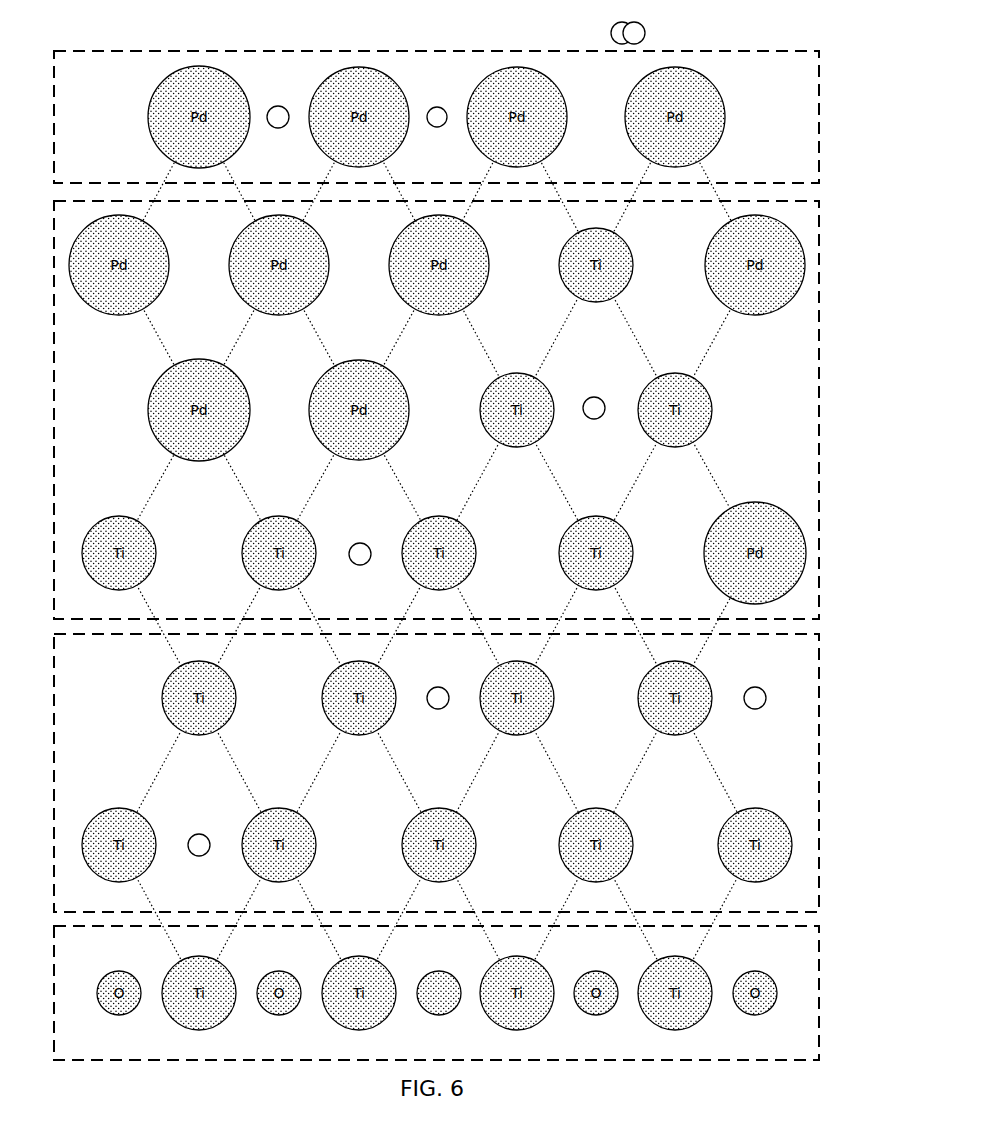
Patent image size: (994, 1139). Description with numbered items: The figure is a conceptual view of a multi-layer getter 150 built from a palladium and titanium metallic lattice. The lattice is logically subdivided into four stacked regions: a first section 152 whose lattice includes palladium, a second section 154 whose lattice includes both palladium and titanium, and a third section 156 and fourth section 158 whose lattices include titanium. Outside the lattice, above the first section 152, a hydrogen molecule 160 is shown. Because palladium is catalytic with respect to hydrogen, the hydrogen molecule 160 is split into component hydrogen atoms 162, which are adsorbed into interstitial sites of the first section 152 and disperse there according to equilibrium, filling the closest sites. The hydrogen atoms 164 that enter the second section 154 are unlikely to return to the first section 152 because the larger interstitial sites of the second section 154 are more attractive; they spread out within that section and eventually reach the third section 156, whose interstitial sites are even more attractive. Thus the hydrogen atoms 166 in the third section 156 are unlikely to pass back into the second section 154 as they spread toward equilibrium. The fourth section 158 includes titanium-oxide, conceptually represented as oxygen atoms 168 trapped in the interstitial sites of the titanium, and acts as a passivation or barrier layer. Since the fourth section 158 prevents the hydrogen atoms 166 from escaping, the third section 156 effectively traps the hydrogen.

The multi-layer getter 150 is at (168, 21).
The first section 152 is at (92, 177).
The second section 154 is at (92, 615).
The third section 156 is at (92, 906).
The fourth section 158 is at (92, 1054).
The hydrogen molecule 160 is at (643, 24).
The hydrogen atoms 162 is at (278, 106).
The hydrogen atoms 164 is at (594, 397).
The hydrogen atoms 166 is at (199, 834).
The oxygen atoms 168 is at (439, 970).